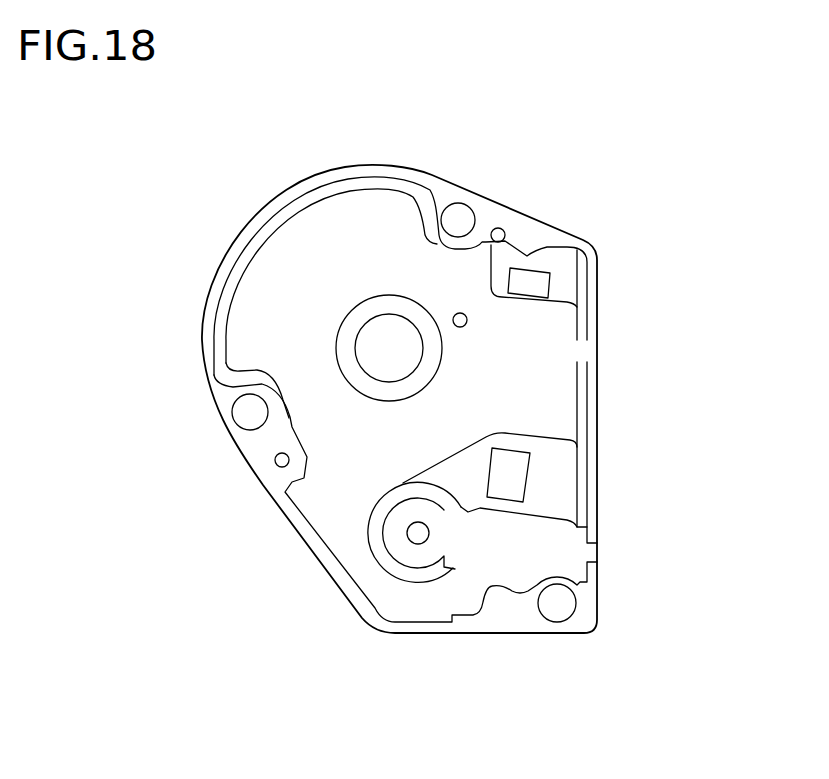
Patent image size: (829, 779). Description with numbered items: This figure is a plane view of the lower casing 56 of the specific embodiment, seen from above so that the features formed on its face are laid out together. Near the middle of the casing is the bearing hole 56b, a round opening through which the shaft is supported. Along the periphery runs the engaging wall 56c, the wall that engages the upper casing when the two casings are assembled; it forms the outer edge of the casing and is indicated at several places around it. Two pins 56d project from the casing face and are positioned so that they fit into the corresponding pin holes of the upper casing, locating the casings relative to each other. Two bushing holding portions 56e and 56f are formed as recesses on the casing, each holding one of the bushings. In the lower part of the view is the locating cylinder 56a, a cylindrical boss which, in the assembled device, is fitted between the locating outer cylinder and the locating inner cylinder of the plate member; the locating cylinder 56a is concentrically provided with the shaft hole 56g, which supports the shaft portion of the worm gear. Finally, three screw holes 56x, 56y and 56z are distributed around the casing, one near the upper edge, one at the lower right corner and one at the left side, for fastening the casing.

The lower casing 56 is at (232, 247).
The locating cylinder 56a is at (377, 540).
The bearing hole 56b is at (382, 308).
The engaging wall 56c is at (332, 186).
The pins 56d is at (500, 228).
The bushing holding portion 56e is at (537, 283).
The bushing holding portion 56f is at (513, 473).
The shaft hole 56g is at (417, 540).
The screw hole 56x is at (463, 216).
The screw hole 56y is at (565, 600).
The screw hole 56z is at (243, 413).